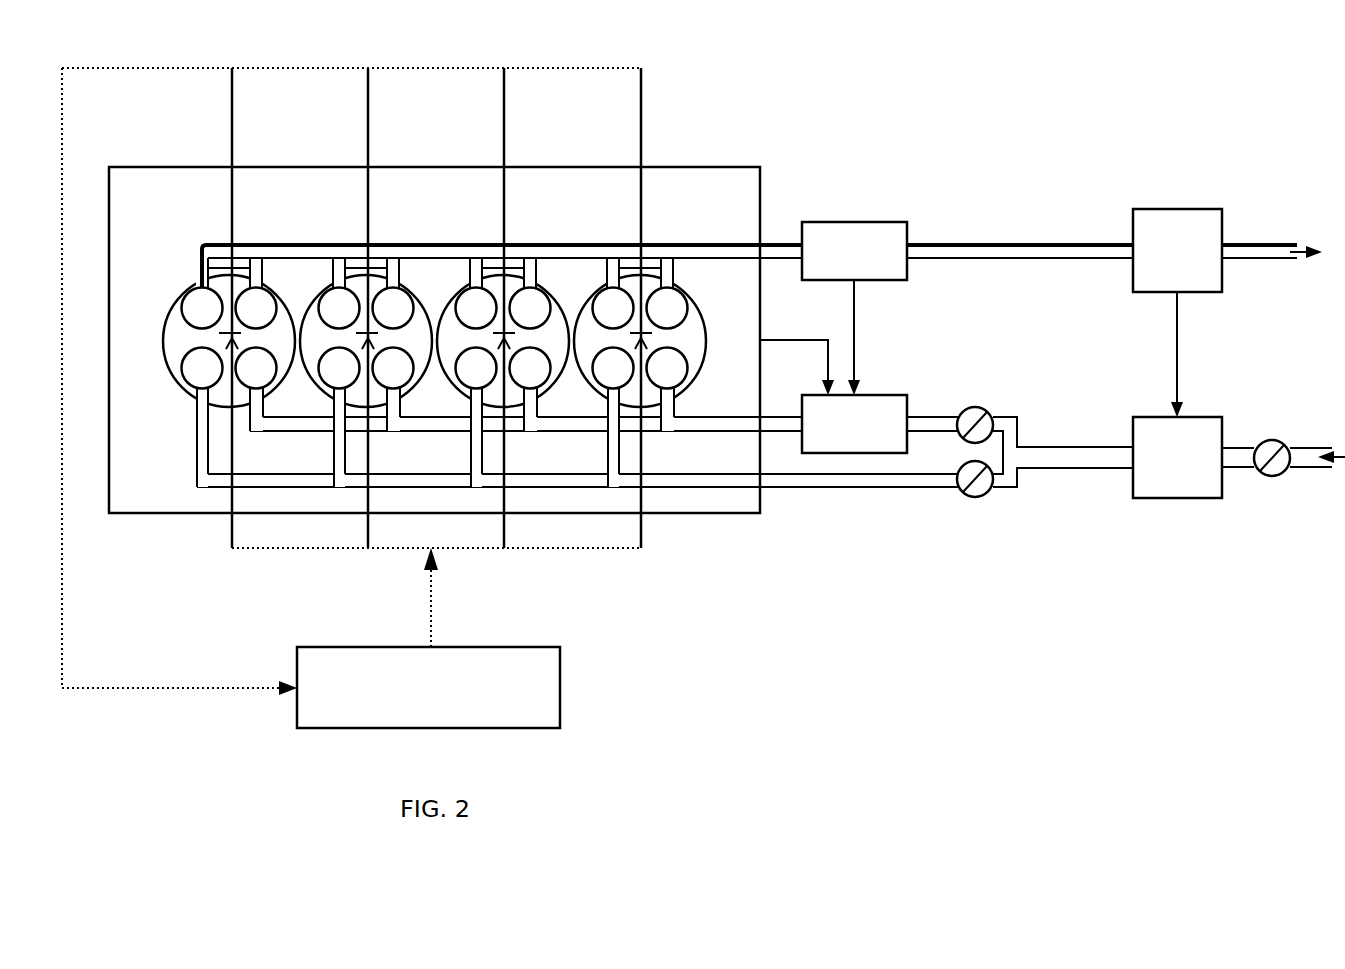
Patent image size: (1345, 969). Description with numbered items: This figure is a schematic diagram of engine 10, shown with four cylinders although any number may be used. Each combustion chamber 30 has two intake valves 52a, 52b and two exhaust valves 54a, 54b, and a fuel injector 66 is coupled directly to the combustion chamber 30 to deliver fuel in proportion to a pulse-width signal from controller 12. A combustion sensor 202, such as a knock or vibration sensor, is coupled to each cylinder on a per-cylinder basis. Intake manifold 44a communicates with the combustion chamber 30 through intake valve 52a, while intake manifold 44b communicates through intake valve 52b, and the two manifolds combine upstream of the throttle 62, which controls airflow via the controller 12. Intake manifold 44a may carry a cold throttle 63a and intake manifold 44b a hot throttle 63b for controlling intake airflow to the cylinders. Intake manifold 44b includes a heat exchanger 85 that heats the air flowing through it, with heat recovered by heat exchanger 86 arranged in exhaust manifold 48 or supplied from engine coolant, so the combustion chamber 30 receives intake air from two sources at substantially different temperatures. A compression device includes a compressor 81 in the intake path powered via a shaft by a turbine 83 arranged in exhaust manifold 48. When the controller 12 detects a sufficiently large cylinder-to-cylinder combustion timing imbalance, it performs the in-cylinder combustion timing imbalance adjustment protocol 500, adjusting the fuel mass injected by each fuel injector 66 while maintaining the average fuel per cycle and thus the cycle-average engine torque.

The engine 10 is at (430, 213).
The controller 12 is at (440, 699).
The combustion chamber 30 is at (178, 345).
The exhaust manifold 48 is at (708, 243).
The intake valve 52a is at (195, 368).
The intake valve 52b is at (250, 372).
The exhaust valve 54a is at (196, 303).
The exhaust valve 54b is at (240, 294).
The intake manifold 44a is at (707, 478).
The intake manifold 44b is at (724, 422).
The throttle 62 is at (1270, 476).
The throttle 63a is at (975, 497).
The throttle 63b is at (975, 407).
The fuel injector 66 is at (232, 527).
The compressor 81 is at (1189, 471).
The turbine 83 is at (1189, 263).
The heat exchanger 85 is at (867, 438).
The heat exchanger 86 is at (867, 267).
The combustion sensor 202 is at (232, 95).
The in-cylinder combustion timing imbalance adjustment protocol 500 is at (431, 630).